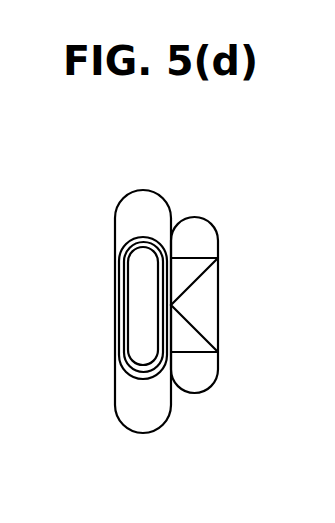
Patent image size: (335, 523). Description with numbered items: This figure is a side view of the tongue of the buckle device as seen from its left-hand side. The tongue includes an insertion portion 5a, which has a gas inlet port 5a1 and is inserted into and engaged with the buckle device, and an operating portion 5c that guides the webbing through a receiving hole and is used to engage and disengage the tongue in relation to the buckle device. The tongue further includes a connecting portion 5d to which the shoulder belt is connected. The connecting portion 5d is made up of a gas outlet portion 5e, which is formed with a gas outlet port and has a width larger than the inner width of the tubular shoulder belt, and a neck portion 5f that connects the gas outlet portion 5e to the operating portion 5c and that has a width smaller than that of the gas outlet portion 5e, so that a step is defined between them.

The operating portion 5c is at (143, 190).
The insertion portion 5a is at (161, 379).
The gas inlet port 5a1 is at (133, 312).
The connecting portion 5d is at (313, 213).
The gas outlet portion 5e is at (207, 243).
The neck portion 5f is at (207, 303).